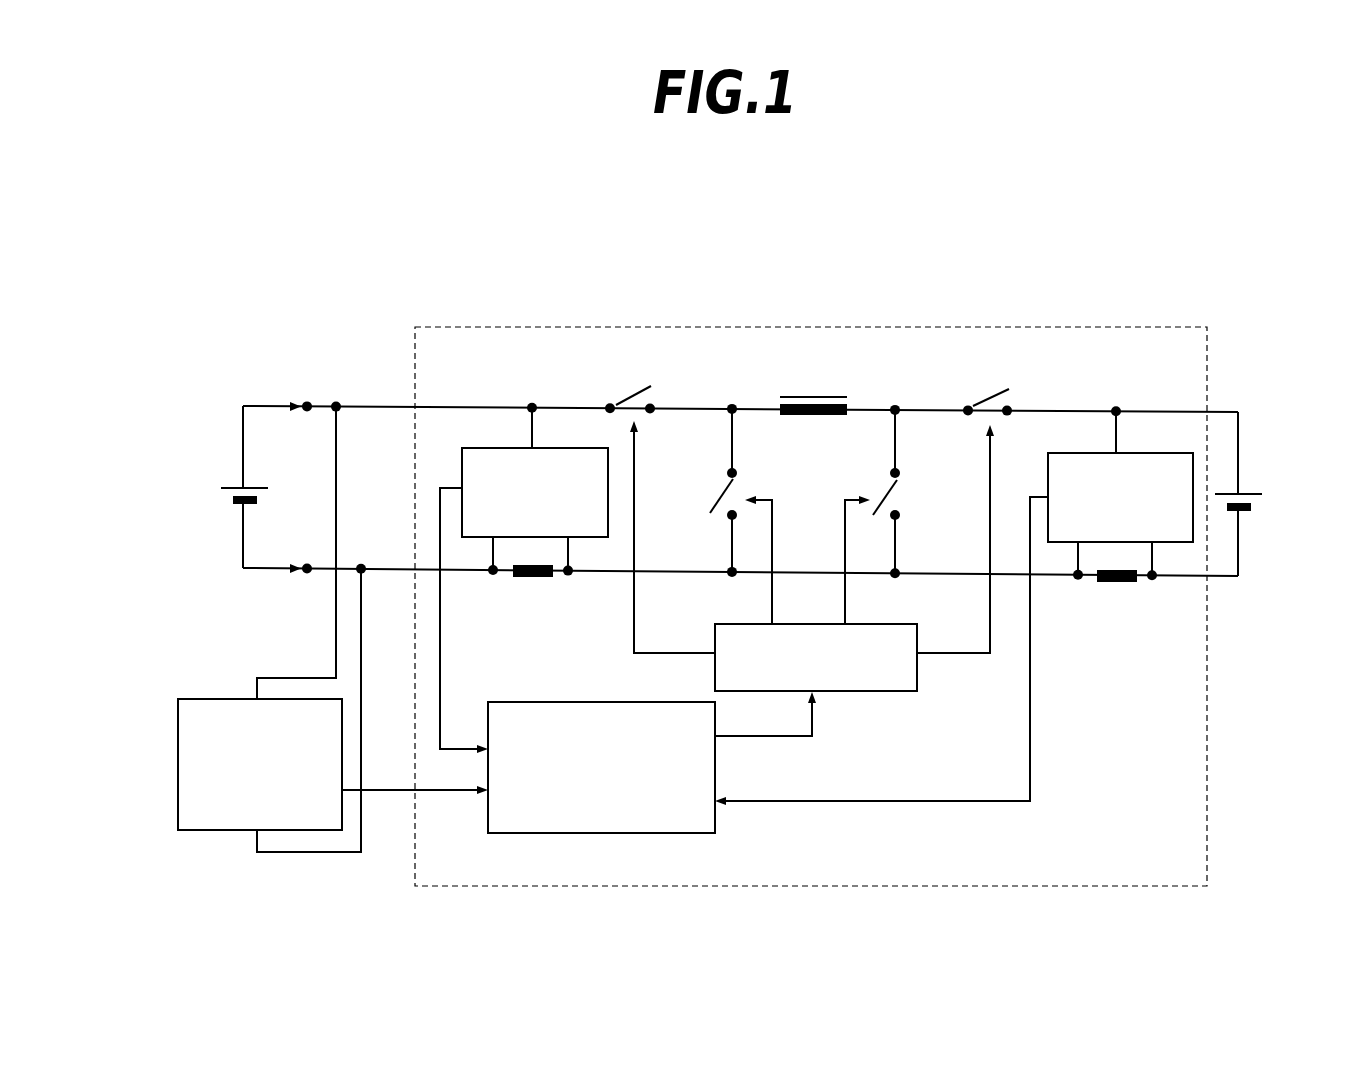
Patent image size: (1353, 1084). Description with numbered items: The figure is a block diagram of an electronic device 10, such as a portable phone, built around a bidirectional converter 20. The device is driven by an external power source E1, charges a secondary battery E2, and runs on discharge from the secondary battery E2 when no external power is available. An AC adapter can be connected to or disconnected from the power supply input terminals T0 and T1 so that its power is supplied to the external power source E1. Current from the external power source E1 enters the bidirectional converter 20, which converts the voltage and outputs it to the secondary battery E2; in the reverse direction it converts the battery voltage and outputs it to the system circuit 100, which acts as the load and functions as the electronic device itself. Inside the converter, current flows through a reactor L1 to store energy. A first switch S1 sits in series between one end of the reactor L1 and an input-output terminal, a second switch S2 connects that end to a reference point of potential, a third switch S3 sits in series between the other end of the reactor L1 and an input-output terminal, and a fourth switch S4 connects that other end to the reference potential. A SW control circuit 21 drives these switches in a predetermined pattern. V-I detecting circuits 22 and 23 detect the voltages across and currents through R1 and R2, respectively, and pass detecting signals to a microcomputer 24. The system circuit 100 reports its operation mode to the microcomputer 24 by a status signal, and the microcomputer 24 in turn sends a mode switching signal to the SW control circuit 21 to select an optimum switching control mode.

The electronic device 10 is at (731, 238).
The bidirectional converter 20 is at (885, 327).
The SW control circuit 21 is at (917, 676).
The V-I detecting circuit 22 is at (497, 447).
The V-I detecting circuit 23 is at (1133, 451).
The microcomputer 24 is at (590, 700).
The system circuit 100 is at (235, 832).
The power supply input terminal T0 is at (302, 399).
The power supply input terminal T1 is at (302, 576).
The external power source E1 is at (234, 487).
The secondary battery E2 is at (1248, 494).
The first switch S1 is at (625, 385).
The second switch S2 is at (710, 494).
The third switch S3 is at (977, 391).
The fourth switch S4 is at (903, 494).
The reactor L1 is at (813, 390).
The element R1 is at (530, 590).
The element R2 is at (1115, 597).